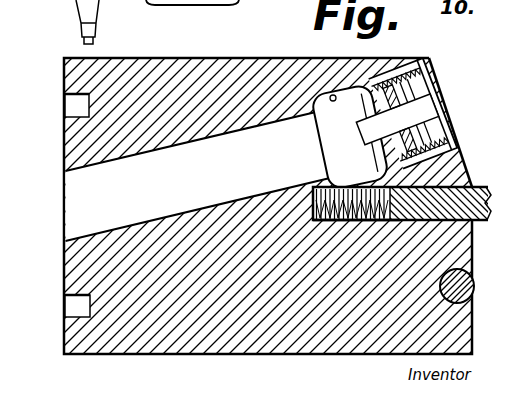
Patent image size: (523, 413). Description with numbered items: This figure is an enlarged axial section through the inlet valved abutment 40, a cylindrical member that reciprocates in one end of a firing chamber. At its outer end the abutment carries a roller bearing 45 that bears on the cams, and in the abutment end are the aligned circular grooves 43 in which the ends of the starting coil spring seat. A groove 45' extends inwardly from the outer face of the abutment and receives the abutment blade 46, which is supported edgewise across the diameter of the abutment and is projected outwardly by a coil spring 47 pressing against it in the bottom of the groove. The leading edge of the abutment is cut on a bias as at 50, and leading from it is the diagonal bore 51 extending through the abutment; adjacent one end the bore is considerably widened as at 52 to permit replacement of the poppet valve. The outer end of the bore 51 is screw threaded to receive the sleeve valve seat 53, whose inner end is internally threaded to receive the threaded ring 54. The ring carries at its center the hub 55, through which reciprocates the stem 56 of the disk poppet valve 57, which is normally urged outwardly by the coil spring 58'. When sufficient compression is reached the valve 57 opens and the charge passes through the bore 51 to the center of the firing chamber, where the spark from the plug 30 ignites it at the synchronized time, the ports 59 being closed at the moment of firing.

The spark plug 30 is at (86, 14).
The inlet valved abutment 40 is at (206, 341).
The circular groove 43 is at (72, 111).
The roller bearing 45 is at (458, 272).
The groove 45' is at (352, 290).
The abutment blade 46 is at (470, 182).
The coil spring 47 is at (325, 223).
The bias cut 50 is at (472, 185).
The diagonal bore 51 is at (200, 176).
The widened portion 52 is at (334, 95).
The sleeve valve seat 53 is at (405, 110).
The threaded ring 54 is at (386, 94).
The hub 55 is at (401, 137).
The stem 56 is at (416, 118).
The disk poppet valve 57 is at (414, 101).
The coil spring 58' is at (403, 96).
The port 59 is at (380, 118).